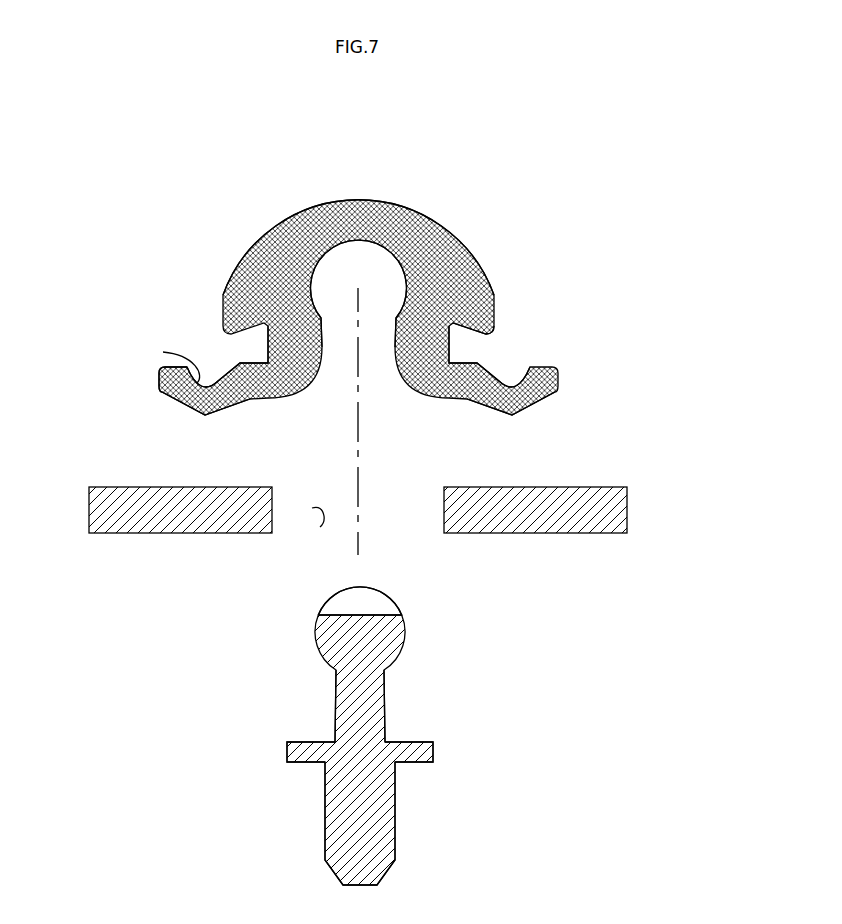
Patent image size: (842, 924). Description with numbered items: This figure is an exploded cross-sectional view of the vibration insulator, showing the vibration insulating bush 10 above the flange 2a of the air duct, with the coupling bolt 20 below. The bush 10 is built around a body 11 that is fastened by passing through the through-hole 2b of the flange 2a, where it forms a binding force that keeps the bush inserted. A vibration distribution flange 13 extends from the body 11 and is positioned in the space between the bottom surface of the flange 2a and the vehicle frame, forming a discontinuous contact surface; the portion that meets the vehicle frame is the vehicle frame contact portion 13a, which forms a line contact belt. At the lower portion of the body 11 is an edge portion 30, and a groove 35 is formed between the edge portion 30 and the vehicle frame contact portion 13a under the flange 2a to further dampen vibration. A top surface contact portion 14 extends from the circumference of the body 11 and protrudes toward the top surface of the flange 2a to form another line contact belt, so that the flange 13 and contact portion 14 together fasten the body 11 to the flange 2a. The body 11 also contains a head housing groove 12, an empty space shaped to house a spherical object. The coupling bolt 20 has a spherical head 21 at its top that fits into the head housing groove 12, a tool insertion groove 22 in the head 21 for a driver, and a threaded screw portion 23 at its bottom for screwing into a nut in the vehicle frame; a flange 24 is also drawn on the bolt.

The vibration insulating bush 10 is at (488, 215).
The body 11 is at (307, 225).
The head housing groove 12 is at (352, 264).
The vibration distribution flange 13 is at (240, 363).
The vehicle frame contact portion 13a is at (205, 415).
The top surface contact portion 14 is at (490, 333).
The edge portion 30 is at (158, 385).
The groove 35 is at (163, 352).
The flange 2a is at (197, 517).
The through-hole 2b is at (322, 515).
The coupling bolt 20 is at (418, 600).
The head 21 is at (335, 647).
The tool insertion groove 22 is at (338, 612).
The screw portion 23 is at (380, 808).
The flange 24 is at (420, 750).